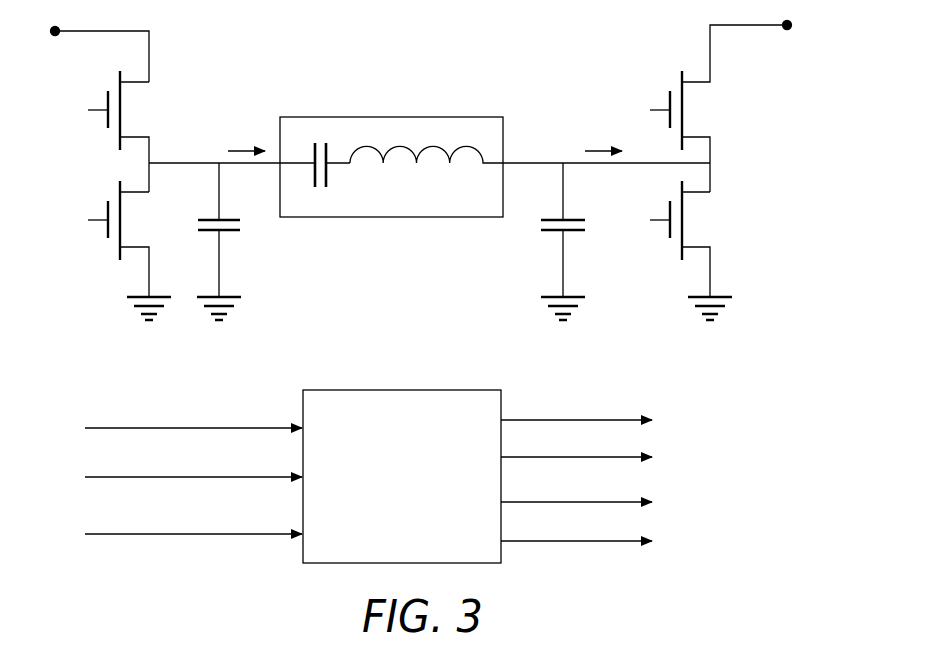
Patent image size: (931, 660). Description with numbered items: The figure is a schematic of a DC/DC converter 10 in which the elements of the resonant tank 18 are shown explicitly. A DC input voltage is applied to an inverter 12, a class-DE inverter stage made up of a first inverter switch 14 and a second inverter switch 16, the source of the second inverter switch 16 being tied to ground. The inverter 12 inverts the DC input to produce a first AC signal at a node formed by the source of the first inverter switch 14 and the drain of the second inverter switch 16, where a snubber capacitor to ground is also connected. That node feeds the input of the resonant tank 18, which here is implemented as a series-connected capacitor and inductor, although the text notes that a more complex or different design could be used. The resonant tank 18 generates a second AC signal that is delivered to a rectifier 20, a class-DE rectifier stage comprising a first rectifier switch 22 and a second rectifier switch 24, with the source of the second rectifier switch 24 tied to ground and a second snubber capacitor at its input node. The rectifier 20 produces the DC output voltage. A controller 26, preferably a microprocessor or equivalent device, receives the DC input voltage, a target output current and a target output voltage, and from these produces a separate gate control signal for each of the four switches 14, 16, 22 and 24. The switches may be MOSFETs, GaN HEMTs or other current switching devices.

The DC/DC converter 10 is at (429, 164).
The inverter 12 is at (145, 169).
The first inverter switch 14 is at (172, 108).
The second inverter switch 16 is at (160, 232).
The resonant tank 18 is at (456, 117).
The rectifier 20 is at (726, 166).
The first rectifier switch 22 is at (742, 112).
The second rectifier switch 24 is at (742, 222).
The controller 26 is at (420, 390).